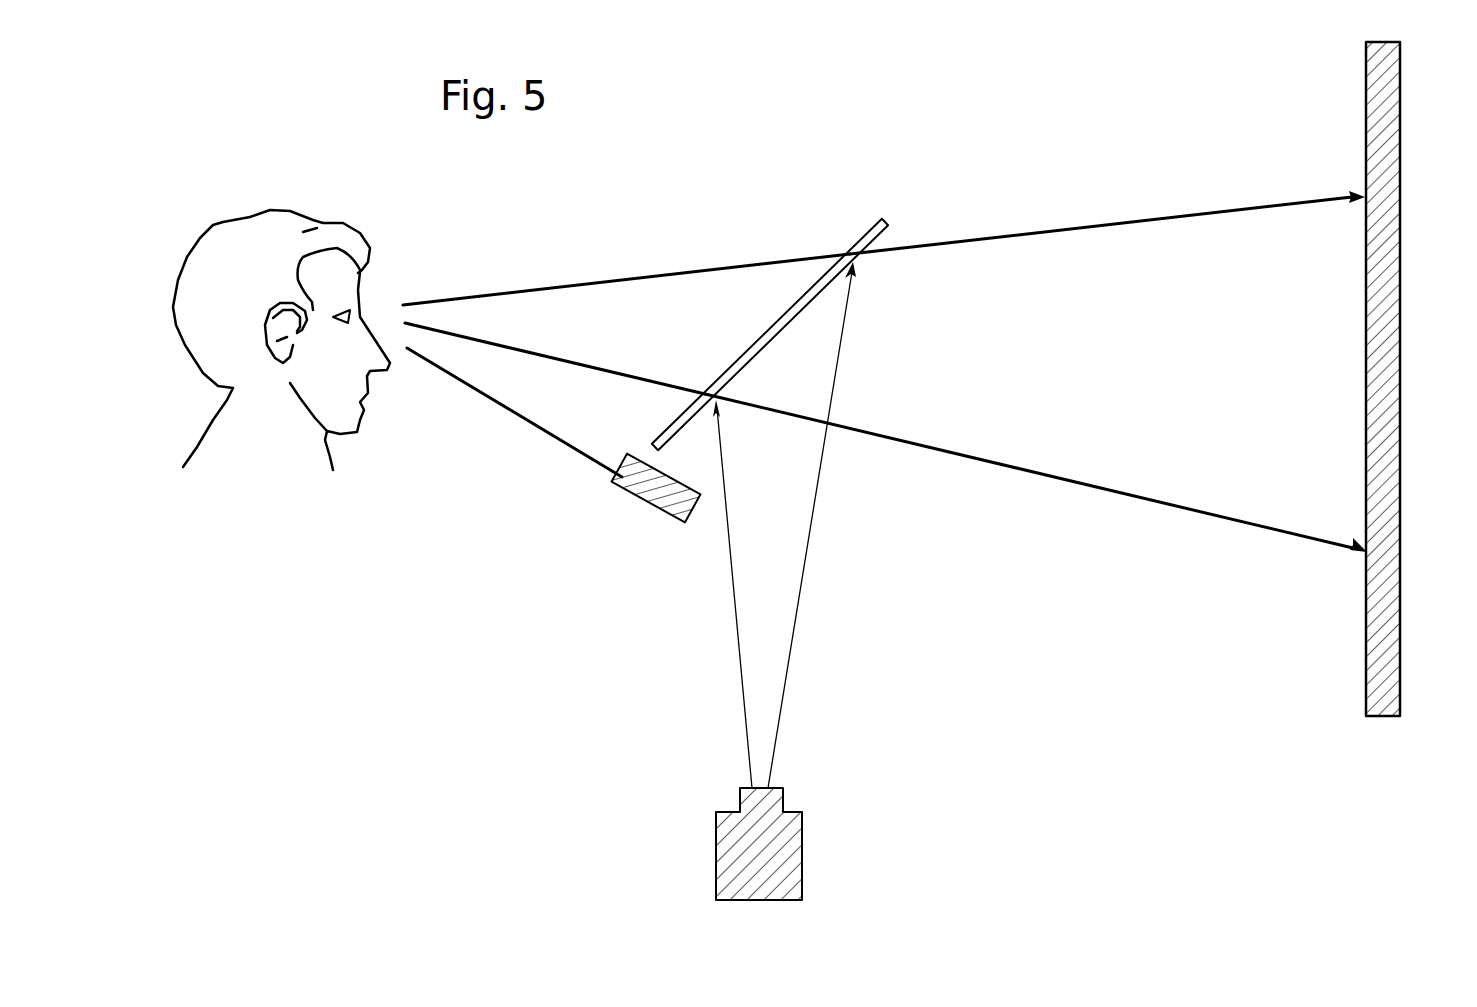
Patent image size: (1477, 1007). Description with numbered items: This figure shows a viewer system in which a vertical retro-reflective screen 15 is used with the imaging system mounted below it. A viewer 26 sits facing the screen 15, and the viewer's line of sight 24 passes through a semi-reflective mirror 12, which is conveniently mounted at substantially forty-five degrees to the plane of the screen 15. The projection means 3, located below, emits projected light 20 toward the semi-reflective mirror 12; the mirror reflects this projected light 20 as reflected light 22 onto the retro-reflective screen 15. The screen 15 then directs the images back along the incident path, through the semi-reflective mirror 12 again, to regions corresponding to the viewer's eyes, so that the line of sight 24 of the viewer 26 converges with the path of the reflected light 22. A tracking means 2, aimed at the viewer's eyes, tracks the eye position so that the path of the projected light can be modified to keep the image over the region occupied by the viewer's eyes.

The viewer 26 is at (278, 232).
The line of sight 24 is at (645, 277).
The reflected light 22 is at (1145, 199).
The semi-reflective mirror 12 is at (890, 220).
The tracking means 2 is at (645, 502).
The projected light 20 is at (738, 670).
The projection means 3 is at (792, 812).
The retro-reflective screen 15 is at (1400, 505).